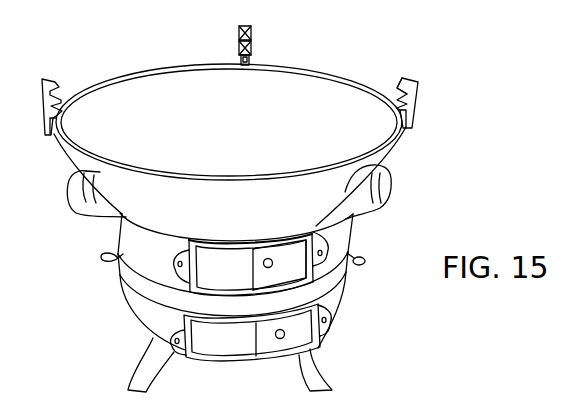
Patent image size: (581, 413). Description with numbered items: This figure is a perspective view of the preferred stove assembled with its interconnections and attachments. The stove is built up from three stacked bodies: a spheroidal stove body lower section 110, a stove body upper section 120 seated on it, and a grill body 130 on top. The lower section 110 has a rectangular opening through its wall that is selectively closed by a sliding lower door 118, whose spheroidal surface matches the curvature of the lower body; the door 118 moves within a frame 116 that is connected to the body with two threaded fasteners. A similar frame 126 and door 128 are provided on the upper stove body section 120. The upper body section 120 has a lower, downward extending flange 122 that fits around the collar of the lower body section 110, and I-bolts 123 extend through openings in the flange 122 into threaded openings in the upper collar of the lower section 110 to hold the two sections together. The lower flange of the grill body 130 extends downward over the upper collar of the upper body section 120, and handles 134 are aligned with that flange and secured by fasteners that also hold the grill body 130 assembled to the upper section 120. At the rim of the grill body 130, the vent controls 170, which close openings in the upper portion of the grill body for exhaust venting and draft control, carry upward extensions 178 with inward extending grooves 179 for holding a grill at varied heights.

The stove body lower section 110 is at (140, 328).
The frame 116 is at (173, 358).
The lower door 118 is at (280, 350).
The stove body upper section 120 is at (120, 232).
The flange 122 is at (115, 266).
The I-bolts 123 is at (359, 272).
The frame 126 is at (200, 262).
The door 128 is at (290, 272).
The grill body 130 is at (387, 152).
The handles 134 is at (353, 210).
The vent controls 170 is at (410, 125).
The upward extensions 178 is at (417, 96).
The grooves 179 is at (400, 90).